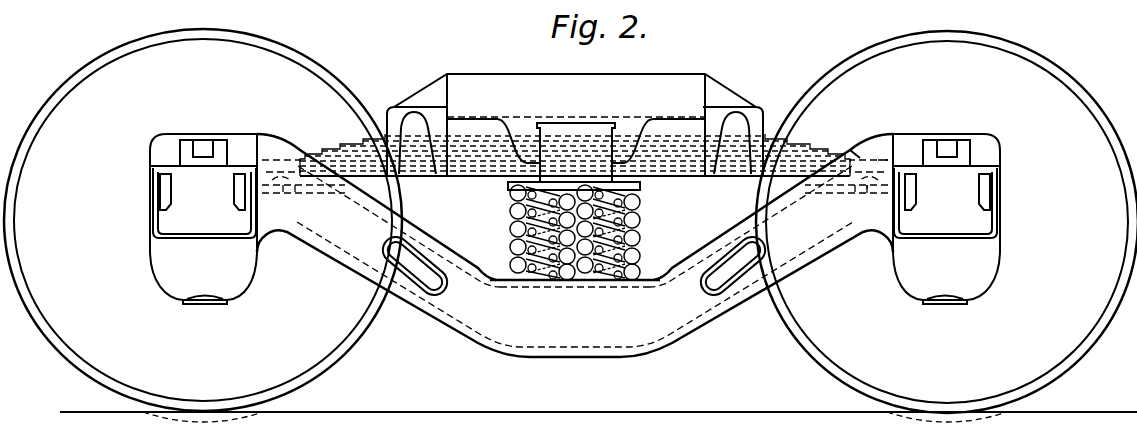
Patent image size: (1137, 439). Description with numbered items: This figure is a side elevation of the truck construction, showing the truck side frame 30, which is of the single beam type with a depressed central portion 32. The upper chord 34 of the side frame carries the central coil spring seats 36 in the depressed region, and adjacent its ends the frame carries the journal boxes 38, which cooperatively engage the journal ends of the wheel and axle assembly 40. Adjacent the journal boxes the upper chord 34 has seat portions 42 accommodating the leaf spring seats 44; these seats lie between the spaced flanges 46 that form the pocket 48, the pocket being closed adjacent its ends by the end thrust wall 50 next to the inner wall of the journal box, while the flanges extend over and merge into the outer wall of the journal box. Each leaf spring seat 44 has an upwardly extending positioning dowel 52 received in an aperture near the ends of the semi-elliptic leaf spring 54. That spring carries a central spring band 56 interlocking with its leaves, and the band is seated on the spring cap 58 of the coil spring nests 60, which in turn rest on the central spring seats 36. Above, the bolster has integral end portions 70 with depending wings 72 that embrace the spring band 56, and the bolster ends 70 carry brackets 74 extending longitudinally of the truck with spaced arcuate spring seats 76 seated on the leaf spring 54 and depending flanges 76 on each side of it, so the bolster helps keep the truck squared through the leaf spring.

The truck side frame 30 is at (679, 323).
The depressed central portion 32 is at (536, 342).
The upper chord 34 is at (648, 280).
The central coil spring seats 36 is at (543, 278).
The journal boxes 38 is at (168, 261).
The wheel and axle assembly 40 is at (107, 75).
The seat portions 42 is at (843, 178).
The leaf spring seats 44 is at (870, 247).
The spaced flanges 46 is at (867, 150).
The pocket 48 is at (878, 160).
The end thrust wall 50 is at (890, 161).
The positioning dowel 52 is at (857, 156).
The semi-elliptic leaf spring 54 is at (782, 152).
The central spring band 56 is at (570, 140).
The spring cap 58 is at (510, 185).
The coil spring nests 60 is at (640, 84).
The integral end portions 70 is at (540, 84).
The depending wings 72 is at (628, 128).
The brackets 74 is at (476, 84).
The arcuate spring seats 76 is at (413, 130).